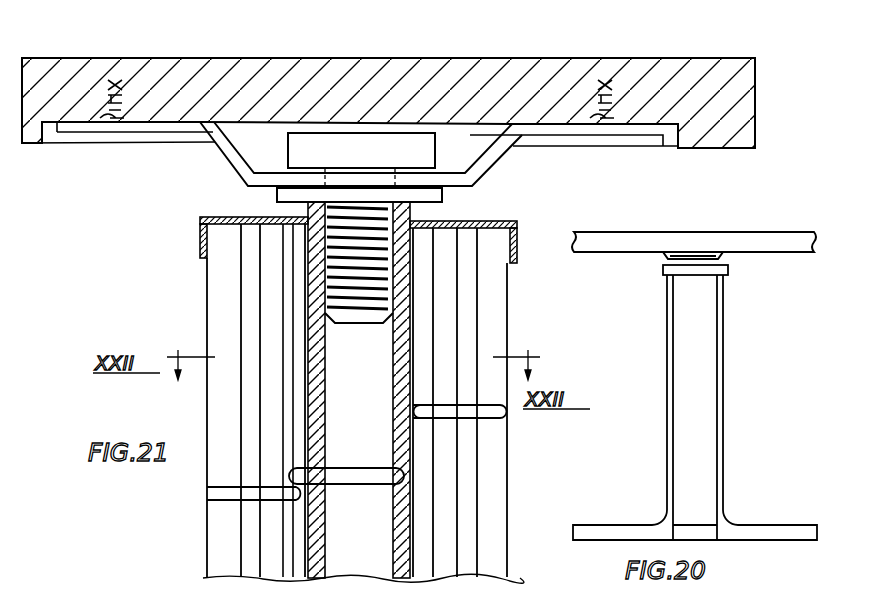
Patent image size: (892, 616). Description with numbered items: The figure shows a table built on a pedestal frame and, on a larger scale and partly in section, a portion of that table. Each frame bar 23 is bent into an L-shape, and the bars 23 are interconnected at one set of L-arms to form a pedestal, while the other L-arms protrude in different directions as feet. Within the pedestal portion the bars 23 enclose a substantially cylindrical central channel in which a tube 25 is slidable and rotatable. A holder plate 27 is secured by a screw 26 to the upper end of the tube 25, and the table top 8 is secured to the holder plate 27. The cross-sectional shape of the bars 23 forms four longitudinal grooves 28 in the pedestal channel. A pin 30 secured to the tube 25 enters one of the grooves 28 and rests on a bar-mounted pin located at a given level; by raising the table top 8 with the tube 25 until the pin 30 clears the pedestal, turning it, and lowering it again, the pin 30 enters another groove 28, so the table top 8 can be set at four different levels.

In FIG. 21, the table top 8 is at (522, 62).
In FIG. 20, the table top 8 is at (743, 235).
In FIG. 21, the frame bar 23 is at (205, 396).
In FIG. 20, the frame bar 23 is at (730, 376).
In FIG. 21, the tube 25 is at (316, 330).
In FIG. 21, the screw 26 is at (296, 146).
In FIG. 21, the holder plate 27 is at (152, 136).
In FIG. 20, the holder plate 27 is at (665, 256).
In FIG. 21, the longitudinal groove 28 is at (292, 268).
In FIG. 21, the pin 30 is at (362, 466).